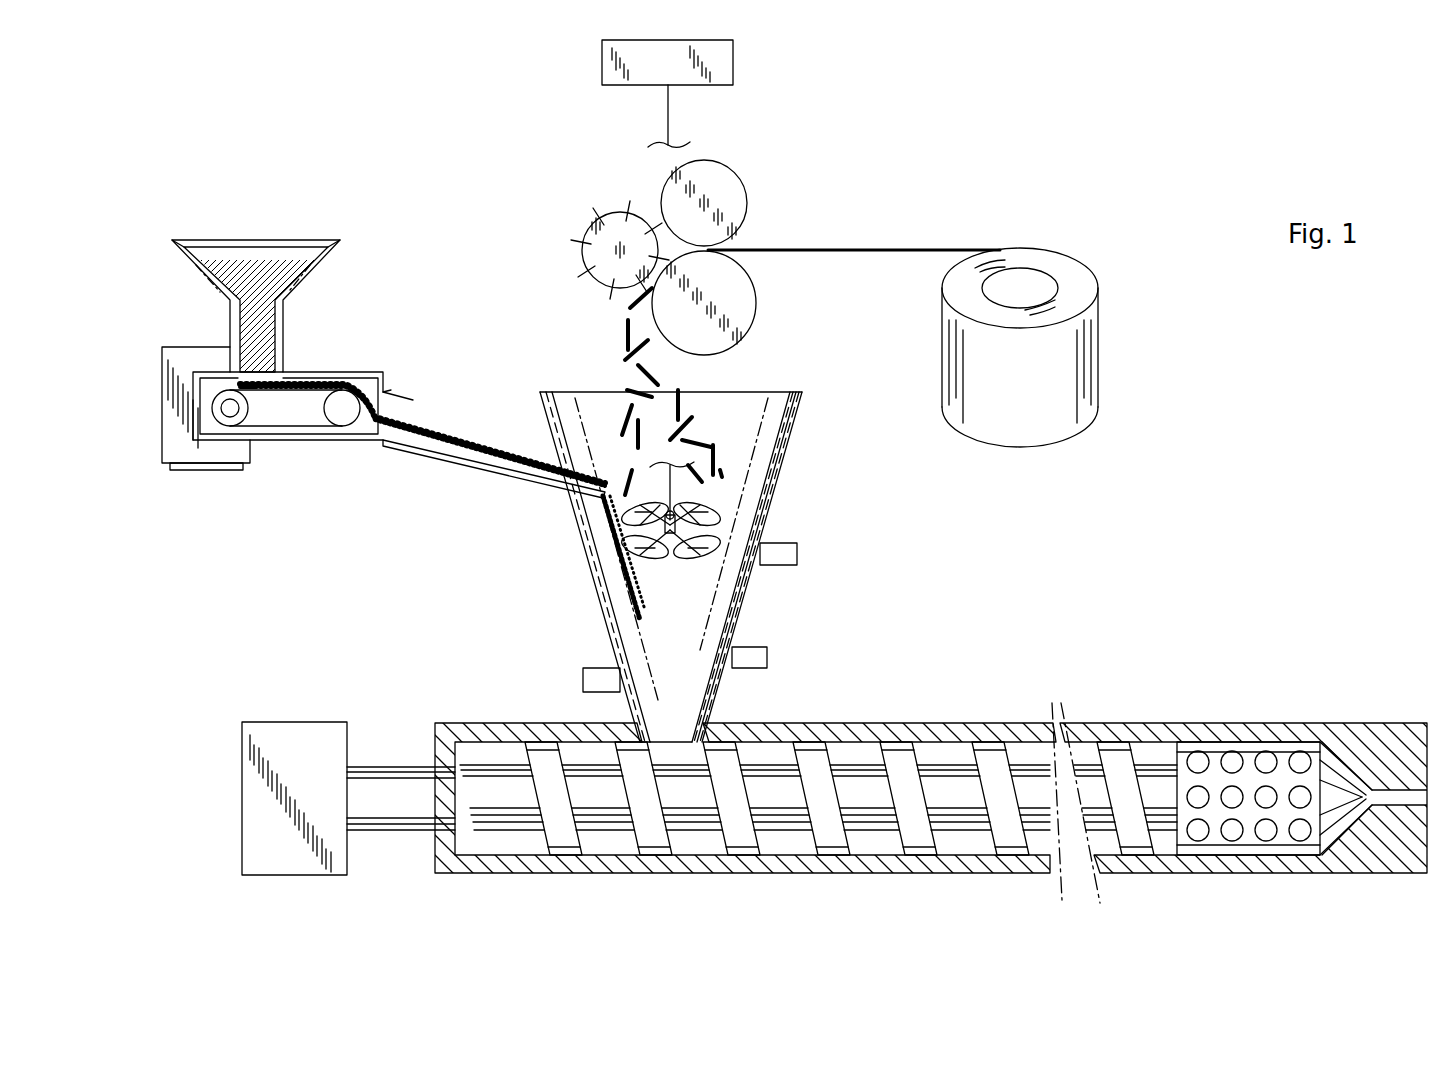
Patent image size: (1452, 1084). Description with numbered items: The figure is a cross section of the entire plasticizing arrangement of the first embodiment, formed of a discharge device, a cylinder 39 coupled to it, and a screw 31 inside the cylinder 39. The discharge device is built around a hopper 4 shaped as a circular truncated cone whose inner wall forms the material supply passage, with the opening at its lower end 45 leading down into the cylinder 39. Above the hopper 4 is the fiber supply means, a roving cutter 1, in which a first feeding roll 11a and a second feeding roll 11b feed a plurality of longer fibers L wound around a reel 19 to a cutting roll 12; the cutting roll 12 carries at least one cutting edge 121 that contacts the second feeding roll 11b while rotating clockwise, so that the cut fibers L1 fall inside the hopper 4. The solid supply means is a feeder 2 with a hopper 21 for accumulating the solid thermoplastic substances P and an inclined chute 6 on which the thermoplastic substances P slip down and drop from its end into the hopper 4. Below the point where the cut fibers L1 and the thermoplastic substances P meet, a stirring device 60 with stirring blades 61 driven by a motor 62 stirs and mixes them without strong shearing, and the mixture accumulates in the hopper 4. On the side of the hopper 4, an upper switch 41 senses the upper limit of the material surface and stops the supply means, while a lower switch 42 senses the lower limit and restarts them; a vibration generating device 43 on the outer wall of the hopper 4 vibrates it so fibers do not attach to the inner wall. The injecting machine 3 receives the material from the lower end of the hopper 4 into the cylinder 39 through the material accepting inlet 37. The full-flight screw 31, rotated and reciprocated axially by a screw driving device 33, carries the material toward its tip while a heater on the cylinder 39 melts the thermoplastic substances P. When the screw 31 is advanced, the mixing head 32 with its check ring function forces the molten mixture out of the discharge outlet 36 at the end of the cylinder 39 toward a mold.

The roving cutter 1 is at (598, 172).
The feeder 2 is at (373, 222).
The injecting machine 3 is at (1124, 705).
The hopper 4 is at (600, 562).
The chute 6 is at (553, 485).
The first feeding roll 11a is at (731, 190).
The second feeding roll 11b is at (743, 293).
The cutting roll 12 is at (584, 241).
The cutting edge 121 is at (610, 288).
The reel 19 is at (1047, 420).
The hopper 21 is at (343, 244).
The screw 31 is at (995, 772).
The mixing head 32 is at (1250, 748).
The screw driving device 33 is at (290, 737).
The discharge outlet 36 is at (1420, 797).
The material accepting inlet 37 is at (667, 740).
The cylinder 39 is at (952, 730).
The upper switch 41 is at (785, 555).
The lower switch 42 is at (755, 658).
The vibration generating device 43 is at (608, 680).
The lower end 45 is at (632, 718).
The stirring device 60 is at (742, 540).
The stirring blades 61 is at (703, 543).
The motor 62 is at (733, 62).
The longer fibers L is at (915, 248).
The cut fibers L1 is at (679, 405).
The thermoplastic substances P is at (478, 452).